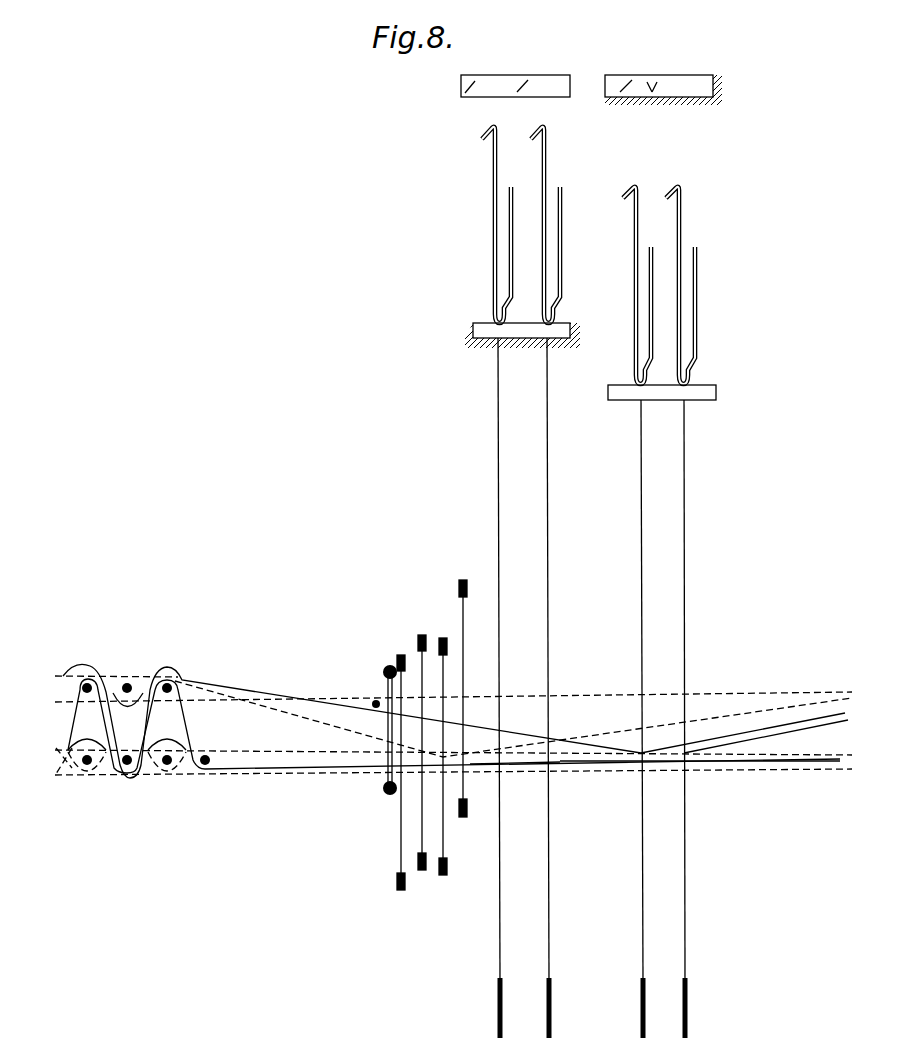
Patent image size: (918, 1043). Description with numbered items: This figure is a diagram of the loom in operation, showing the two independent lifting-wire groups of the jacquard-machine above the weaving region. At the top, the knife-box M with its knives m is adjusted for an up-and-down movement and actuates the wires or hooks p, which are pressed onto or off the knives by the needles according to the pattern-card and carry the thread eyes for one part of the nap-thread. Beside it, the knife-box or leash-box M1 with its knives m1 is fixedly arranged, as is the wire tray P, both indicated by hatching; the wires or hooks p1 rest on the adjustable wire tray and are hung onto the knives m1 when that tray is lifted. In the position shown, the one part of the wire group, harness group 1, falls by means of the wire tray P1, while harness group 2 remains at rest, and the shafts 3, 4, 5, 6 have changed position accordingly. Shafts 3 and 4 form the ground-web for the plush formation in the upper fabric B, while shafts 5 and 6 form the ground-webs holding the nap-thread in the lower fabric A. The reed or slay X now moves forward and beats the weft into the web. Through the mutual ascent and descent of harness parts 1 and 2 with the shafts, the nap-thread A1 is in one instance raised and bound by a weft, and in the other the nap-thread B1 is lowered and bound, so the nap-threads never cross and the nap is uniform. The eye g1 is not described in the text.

The knife-box M is at (540, 82).
The knives m is at (478, 80).
The knife-box (leash-box) M1 is at (695, 83).
The knives m1 is at (653, 84).
The wires or hooks p is at (547, 173).
The wires or hooks p1 is at (492, 212).
The wire tray P is at (480, 327).
The wire tray P1 is at (618, 393).
The harness group 1 is at (642, 454).
The harness group 2 is at (495, 393).
The shaft 3 is at (465, 577).
The shaft 4 is at (444, 633).
The shaft 5 is at (423, 632).
The shaft 6 is at (402, 650).
The reed (slay) X is at (383, 668).
The guide eye g1 is at (372, 702).
The lower fabric A is at (223, 758).
The nap-thread (nap-shed) A1 is at (535, 767).
The upper fabric B is at (195, 690).
The nap-thread (nap-shed) B1 is at (580, 738).